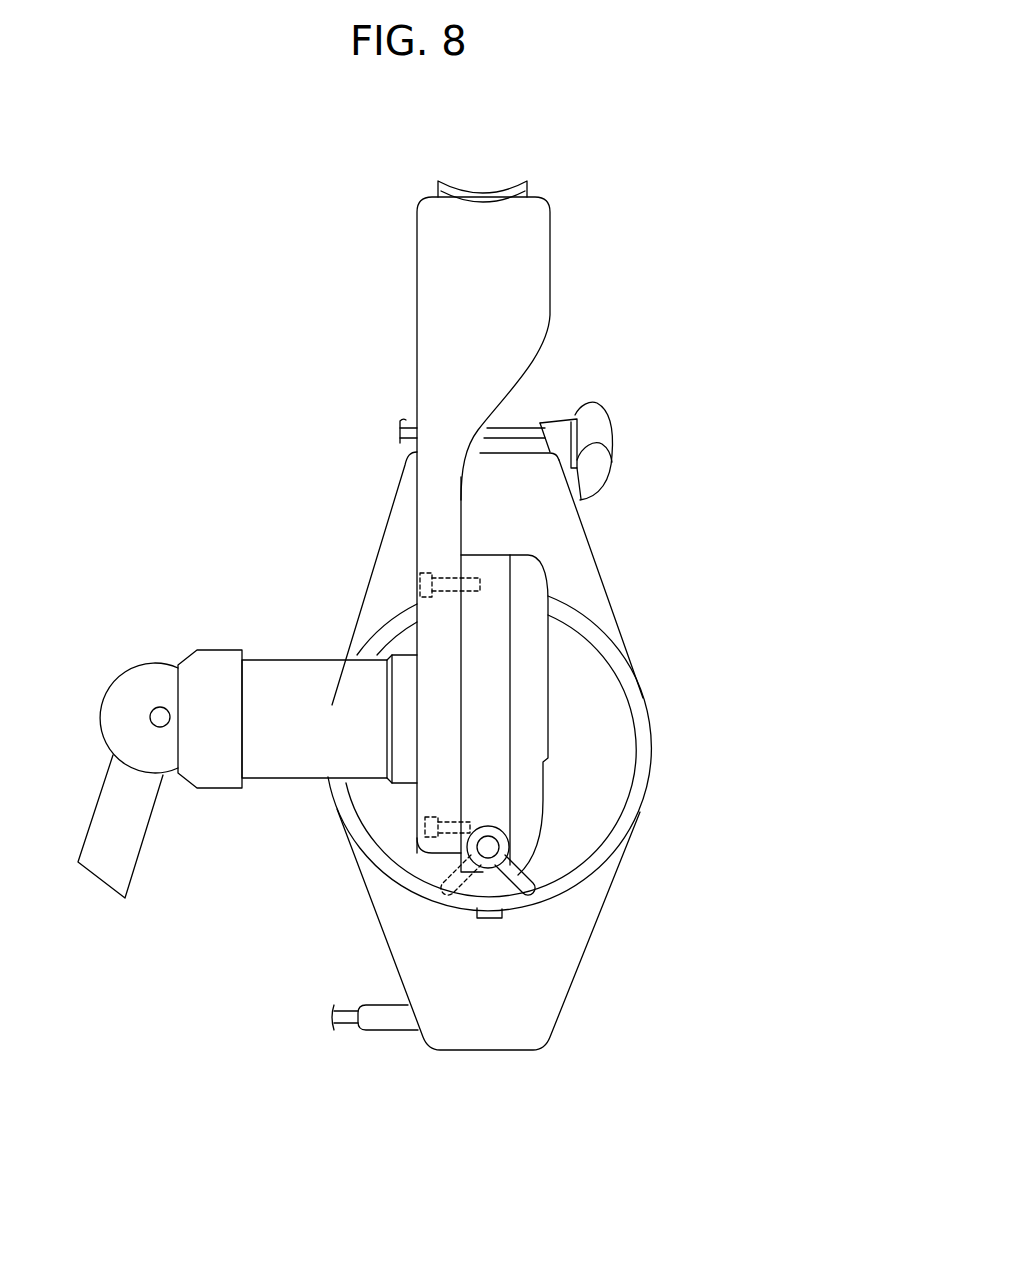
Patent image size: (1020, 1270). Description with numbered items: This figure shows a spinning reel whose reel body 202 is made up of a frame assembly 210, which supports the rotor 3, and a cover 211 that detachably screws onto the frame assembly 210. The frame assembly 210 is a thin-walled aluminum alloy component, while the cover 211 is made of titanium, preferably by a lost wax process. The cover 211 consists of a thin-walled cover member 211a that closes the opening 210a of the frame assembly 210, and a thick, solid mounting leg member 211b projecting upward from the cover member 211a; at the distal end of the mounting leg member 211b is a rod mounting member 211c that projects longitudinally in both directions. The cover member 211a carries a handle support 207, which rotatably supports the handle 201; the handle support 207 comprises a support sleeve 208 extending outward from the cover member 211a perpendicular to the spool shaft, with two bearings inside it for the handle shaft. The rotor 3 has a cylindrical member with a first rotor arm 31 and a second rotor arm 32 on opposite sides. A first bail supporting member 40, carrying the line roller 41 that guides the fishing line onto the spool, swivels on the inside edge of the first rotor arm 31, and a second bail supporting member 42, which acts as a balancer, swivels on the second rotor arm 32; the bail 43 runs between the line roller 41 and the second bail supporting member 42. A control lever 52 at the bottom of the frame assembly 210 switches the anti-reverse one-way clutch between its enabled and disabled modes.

The rotor 3 is at (617, 780).
The first rotor arm 31 is at (407, 498).
The second rotor arm 32 is at (532, 1020).
The first bail supporting member 40 is at (600, 467).
The line roller 41 is at (593, 404).
The second bail supporting member 42 is at (392, 1021).
The bail 43 is at (338, 1026).
The control lever 52 is at (533, 882).
The handle 201 is at (148, 830).
The reel body 202 is at (566, 553).
The handle support 207 is at (272, 656).
The support sleeve 208 is at (298, 781).
The frame assembly 210 is at (552, 622).
The opening 210a is at (510, 725).
The cover 211 is at (418, 593).
The cover member 211a is at (490, 680).
The mounting leg member 211b is at (550, 510).
The rod mounting member 211c is at (502, 183).